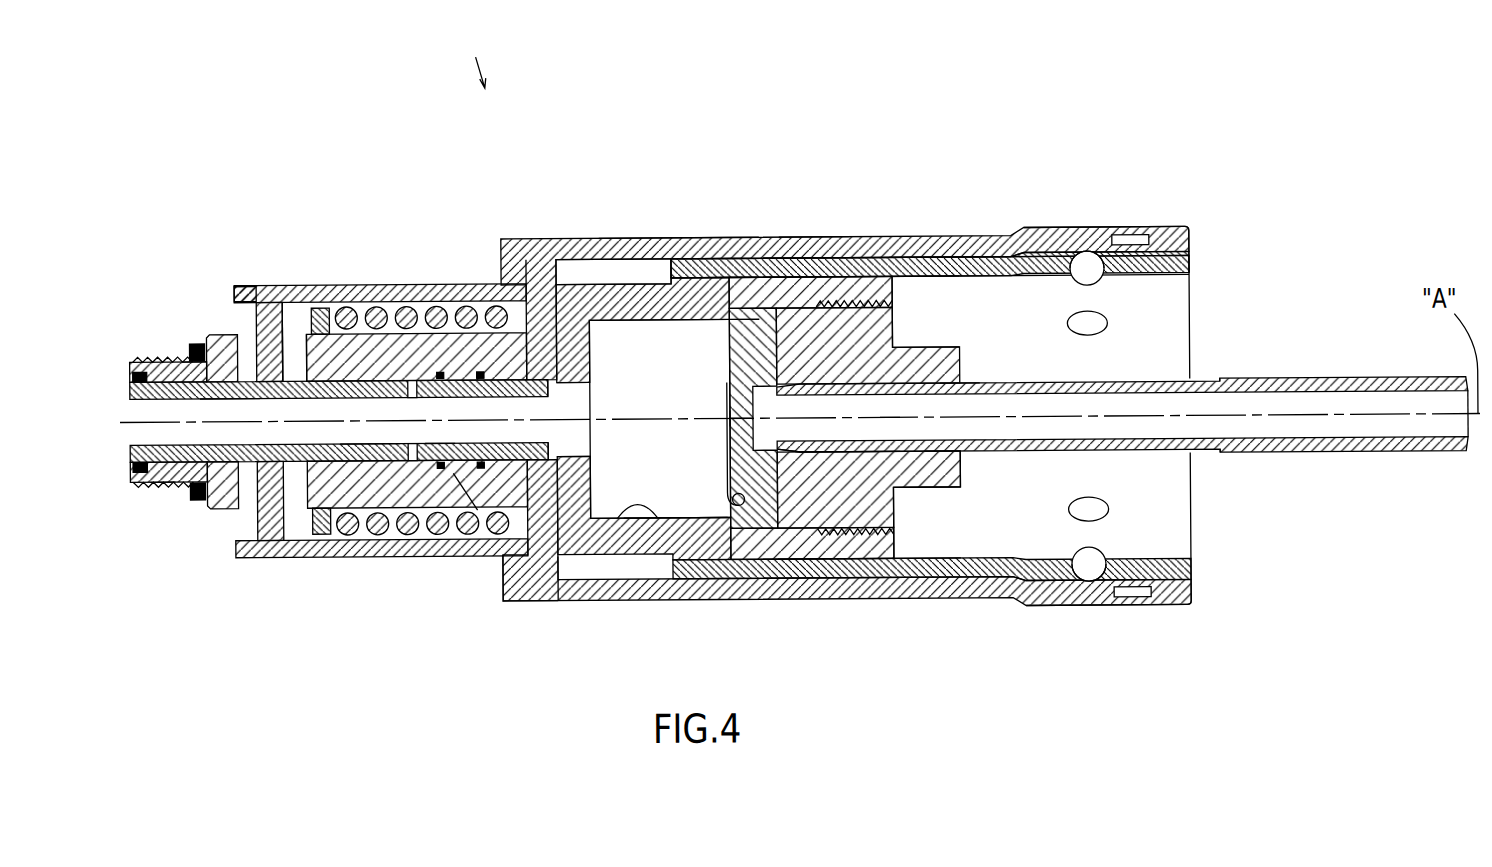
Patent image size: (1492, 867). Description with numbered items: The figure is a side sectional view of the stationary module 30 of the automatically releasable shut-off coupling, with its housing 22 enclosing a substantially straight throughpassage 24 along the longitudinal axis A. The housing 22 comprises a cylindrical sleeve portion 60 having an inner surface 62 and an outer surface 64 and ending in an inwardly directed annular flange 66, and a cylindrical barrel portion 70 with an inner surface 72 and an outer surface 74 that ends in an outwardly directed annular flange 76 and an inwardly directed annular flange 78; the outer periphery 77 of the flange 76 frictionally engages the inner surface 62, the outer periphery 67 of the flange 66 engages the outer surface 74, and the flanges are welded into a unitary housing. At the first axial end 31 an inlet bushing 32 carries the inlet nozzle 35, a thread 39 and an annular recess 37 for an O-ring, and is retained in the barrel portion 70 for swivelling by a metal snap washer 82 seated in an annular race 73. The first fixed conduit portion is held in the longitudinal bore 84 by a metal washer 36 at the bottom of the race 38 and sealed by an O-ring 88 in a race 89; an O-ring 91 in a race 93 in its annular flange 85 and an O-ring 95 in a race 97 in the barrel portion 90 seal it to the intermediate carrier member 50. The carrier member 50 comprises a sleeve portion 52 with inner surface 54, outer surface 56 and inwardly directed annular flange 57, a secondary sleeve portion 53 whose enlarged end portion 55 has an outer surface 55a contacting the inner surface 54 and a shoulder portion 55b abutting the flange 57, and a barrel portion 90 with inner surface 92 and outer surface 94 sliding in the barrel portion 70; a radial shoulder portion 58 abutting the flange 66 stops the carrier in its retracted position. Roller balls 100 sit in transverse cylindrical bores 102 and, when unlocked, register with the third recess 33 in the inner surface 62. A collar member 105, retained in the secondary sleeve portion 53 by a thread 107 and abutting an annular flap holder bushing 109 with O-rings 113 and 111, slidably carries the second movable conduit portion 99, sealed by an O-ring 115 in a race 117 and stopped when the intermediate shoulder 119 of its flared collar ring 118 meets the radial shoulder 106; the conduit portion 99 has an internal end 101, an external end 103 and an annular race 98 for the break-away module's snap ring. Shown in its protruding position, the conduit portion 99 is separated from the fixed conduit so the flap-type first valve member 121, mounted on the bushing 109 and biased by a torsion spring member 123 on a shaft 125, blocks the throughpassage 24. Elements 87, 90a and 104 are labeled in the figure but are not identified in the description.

The housing 22 is at (1185, 229).
The throughpassage 24 is at (257, 433).
The stationary module 30 is at (471, 56).
The first axial end 31 is at (148, 355).
The inlet bushing 32 is at (222, 331).
The third recess 33 is at (1130, 237).
The inlet nozzle 35 is at (168, 482).
The metal washer 36 is at (138, 470).
The annular recess 37 is at (185, 352).
The race 38 is at (135, 368).
The thread 39 is at (196, 498).
The intermediate carrier member 50 is at (1195, 260).
The sleeve portion 52 is at (922, 237).
The secondary sleeve portion 53 is at (645, 300).
The inner surface 54 is at (967, 278).
The enlarged end portion 55 is at (830, 258).
The outer surface 55a is at (890, 258).
The shoulder portion 55b is at (760, 258).
The outer surface 56 is at (985, 238).
The inwardly directed annular flange 57 is at (688, 237).
The radial shoulder portion 58 is at (575, 325).
The sleeve portion 60 is at (742, 237).
The inner surface 62 is at (647, 237).
The outer surface 64 is at (708, 237).
The inwardly directed annular flange 66 is at (505, 237).
The outer periphery 67 is at (528, 258).
The barrel portion 70 is at (415, 282).
The inner surface 72 is at (278, 300).
The annular race 73 is at (287, 327).
The outer surface 74 is at (445, 304).
The outwardly directed annular flange 76 is at (548, 600).
The outer periphery 77 is at (522, 598).
The inwardly directed annular flange 78 is at (602, 486).
The metal snap washer 82 is at (245, 283).
The longitudinal bore 84 is at (262, 398).
The annular flange 85 is at (410, 396).
The bore 87 is at (380, 442).
The O-ring 88 is at (225, 395).
The annular race 89 is at (296, 378).
The barrel portion 90 is at (380, 532).
The spring retainer 90a is at (320, 532).
The O-ring 91 is at (437, 443).
The inner surface 92 is at (600, 405).
The annular race 93 is at (440, 462).
The outer surface 94 is at (322, 306).
The O-ring 95 is at (556, 420).
The annular race 97 is at (479, 377).
The annular race 98 is at (1220, 452).
The second movable conduit portion 99 is at (1112, 384).
The roller balls 100 is at (1105, 278).
The internal end 101 is at (730, 400).
The cylindrical bores 102 is at (1068, 328).
The external end 103 is at (1468, 452).
The ball 104 is at (1072, 278).
The collar member 105 is at (880, 560).
The radial shoulder 106 is at (925, 490).
The thread 107 is at (862, 300).
The annular flap holder bushing 109 is at (740, 332).
The rubber O-ring 111 is at (728, 428).
The rubber O-ring 113 is at (815, 237).
The O-ring 115 is at (955, 385).
The annular race 117 is at (943, 452).
The flared collar ring 118 is at (877, 452).
The intermediate shoulder 119 is at (890, 425).
The first valve member 121 is at (728, 455).
The torsion spring member 123 is at (588, 557).
The shaft 125 is at (732, 500).